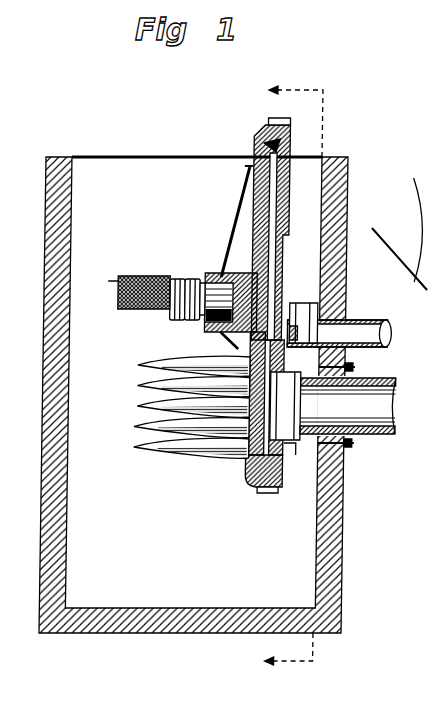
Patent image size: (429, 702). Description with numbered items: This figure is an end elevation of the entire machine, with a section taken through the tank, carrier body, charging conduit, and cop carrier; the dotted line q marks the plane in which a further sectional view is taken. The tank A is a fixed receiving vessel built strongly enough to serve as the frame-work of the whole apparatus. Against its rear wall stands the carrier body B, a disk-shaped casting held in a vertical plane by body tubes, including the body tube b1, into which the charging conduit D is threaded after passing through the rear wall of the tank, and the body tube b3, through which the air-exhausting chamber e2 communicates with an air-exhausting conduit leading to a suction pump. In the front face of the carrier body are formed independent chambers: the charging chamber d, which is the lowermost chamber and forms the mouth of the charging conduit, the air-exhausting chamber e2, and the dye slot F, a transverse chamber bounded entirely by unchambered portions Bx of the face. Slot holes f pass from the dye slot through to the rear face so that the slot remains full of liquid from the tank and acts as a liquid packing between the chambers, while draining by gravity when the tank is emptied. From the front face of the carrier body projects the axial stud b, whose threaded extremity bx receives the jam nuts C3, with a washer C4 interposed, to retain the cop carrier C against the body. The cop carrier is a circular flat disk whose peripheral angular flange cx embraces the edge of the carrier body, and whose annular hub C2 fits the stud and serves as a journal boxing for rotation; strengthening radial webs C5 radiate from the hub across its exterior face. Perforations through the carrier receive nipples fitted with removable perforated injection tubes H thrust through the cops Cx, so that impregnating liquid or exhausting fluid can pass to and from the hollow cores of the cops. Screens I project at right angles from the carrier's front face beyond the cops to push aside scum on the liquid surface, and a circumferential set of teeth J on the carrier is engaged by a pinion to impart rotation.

The tank A is at (50, 226).
The carrier body B is at (290, 208).
The unchambered portions Bx is at (290, 170).
The peripheral angular flange cx is at (268, 126).
The cop carrier C is at (243, 172).
The annular hub C2 is at (224, 276).
The jam nuts C3 is at (166, 276).
The washer C4 is at (203, 281).
The strengthening radial webs C5 is at (228, 281).
The cops Cx is at (191, 457).
The charging conduit D is at (388, 418).
The dye slot F is at (219, 343).
The perforated injection tubes H is at (135, 447).
The screens I is at (105, 282).
The circumferential set of teeth J is at (273, 493).
The axial stud b is at (201, 322).
The threaded extremity bx is at (170, 312).
The body tube b1 is at (299, 452).
The body tube b3 is at (305, 323).
The charging chamber d is at (250, 466).
The air-exhausting chamber e2 is at (393, 332).
The slot holes f is at (292, 332).
The section line q is at (300, 375).